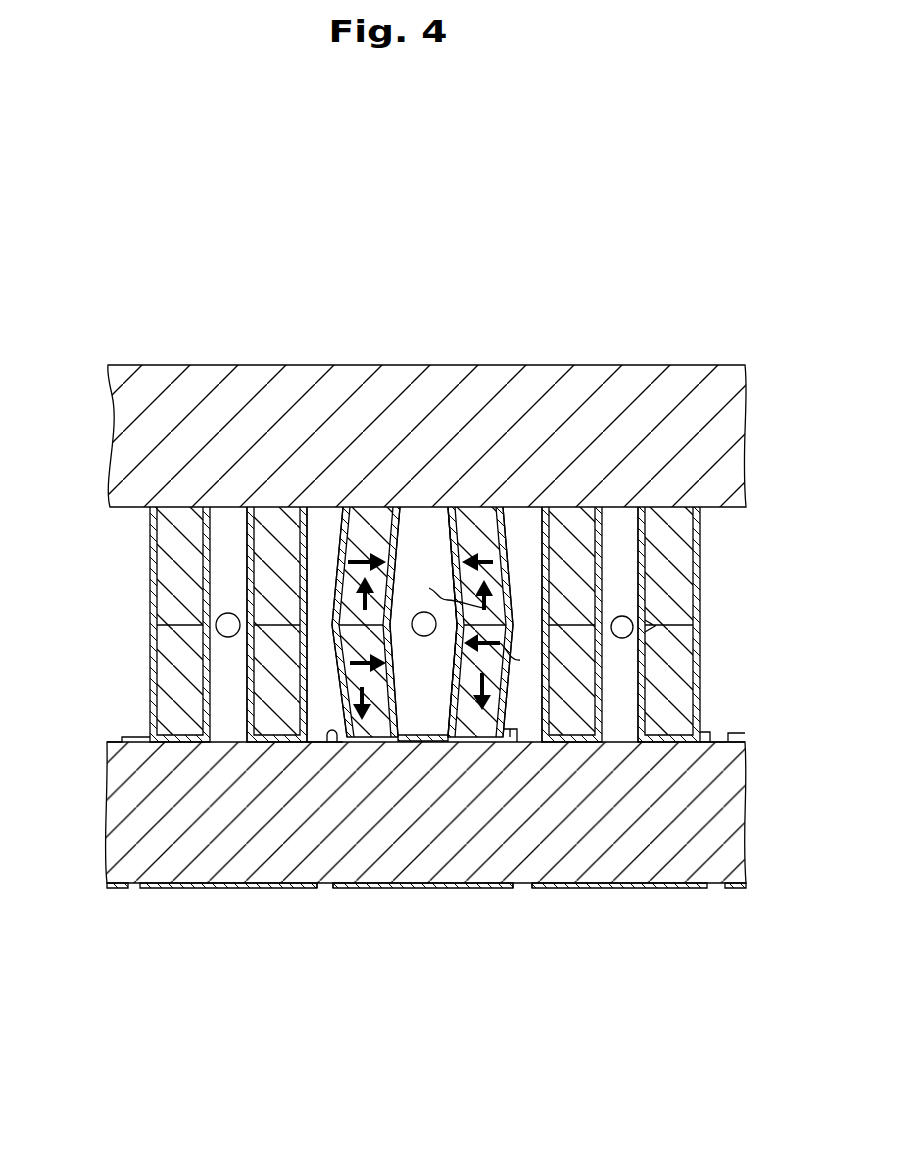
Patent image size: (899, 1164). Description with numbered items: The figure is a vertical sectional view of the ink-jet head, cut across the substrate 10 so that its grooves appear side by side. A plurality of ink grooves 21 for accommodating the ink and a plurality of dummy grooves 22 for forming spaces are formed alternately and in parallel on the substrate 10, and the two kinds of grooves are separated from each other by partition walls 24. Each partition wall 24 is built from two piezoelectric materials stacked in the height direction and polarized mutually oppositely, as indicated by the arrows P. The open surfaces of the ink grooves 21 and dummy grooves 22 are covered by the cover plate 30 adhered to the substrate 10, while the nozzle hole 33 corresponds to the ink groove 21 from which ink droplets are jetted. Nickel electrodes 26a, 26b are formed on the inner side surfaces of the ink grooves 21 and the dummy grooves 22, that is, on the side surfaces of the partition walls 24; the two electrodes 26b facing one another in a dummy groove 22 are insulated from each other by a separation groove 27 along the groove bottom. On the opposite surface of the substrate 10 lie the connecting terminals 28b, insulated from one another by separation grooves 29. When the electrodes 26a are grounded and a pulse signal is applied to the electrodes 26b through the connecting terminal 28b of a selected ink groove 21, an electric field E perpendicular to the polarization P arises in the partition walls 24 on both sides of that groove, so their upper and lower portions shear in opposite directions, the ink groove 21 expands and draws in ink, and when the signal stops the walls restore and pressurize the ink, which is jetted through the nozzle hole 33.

The substrate 10 is at (118, 645).
The ink groove 21 is at (410, 560).
The dummy groove 22 is at (313, 547).
The partition wall 24 is at (270, 547).
The nickel electrode 26a is at (455, 530).
The nickel electrode 26b is at (340, 560).
The separation groove 27 is at (311, 742).
The connecting terminal 28b is at (402, 886).
The separation groove 29 is at (323, 886).
The cover plate 30 is at (527, 393).
The nozzle hole 33 is at (424, 637).